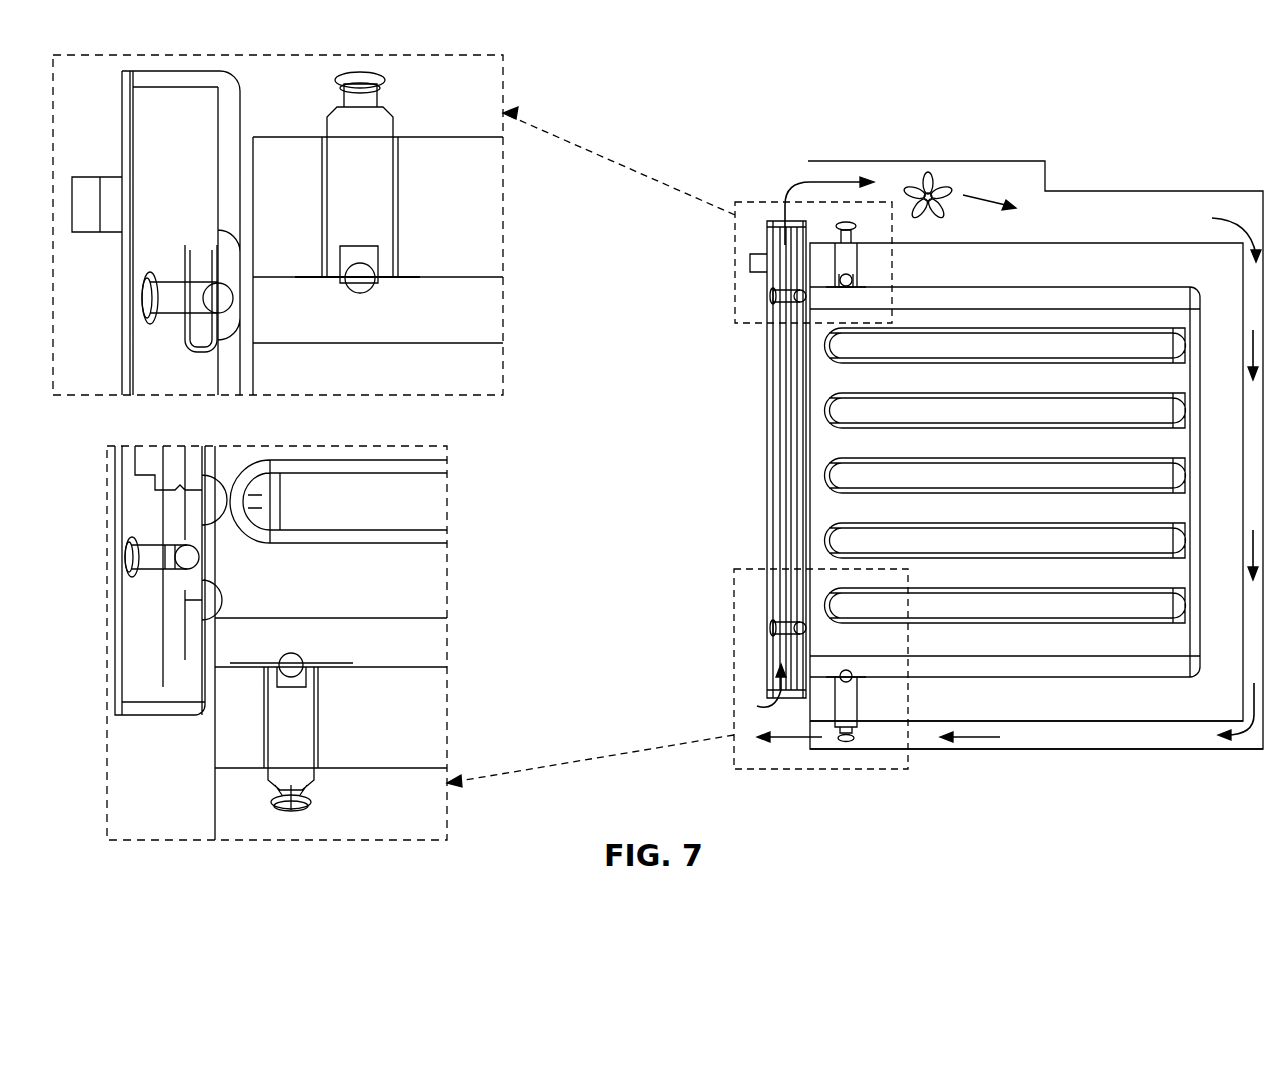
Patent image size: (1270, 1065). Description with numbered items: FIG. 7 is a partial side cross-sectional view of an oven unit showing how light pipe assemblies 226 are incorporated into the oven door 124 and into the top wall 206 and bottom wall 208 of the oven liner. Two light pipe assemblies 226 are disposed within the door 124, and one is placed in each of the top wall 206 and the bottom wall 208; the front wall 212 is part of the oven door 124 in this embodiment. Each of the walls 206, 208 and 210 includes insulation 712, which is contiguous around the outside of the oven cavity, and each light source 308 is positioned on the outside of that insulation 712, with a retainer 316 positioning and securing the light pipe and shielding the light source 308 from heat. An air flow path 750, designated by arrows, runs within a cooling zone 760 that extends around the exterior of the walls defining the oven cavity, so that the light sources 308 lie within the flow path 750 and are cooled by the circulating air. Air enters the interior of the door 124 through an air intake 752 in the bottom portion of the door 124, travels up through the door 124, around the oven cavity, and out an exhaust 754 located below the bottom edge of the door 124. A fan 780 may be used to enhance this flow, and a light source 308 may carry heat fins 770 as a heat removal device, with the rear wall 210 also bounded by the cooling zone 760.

The oven door 124 is at (780, 488).
The top wall 206 is at (1105, 338).
The bottom wall 208 is at (1185, 722).
The rear wall 210 is at (1190, 440).
The front wall 212 is at (800, 400).
The light pipe assembly 226 is at (812, 190).
The light source 308 is at (838, 225).
The retainer 316 is at (385, 122).
The insulation 712 is at (1040, 700).
The air flow path 750 is at (845, 240).
The air intake 752 is at (760, 705).
The exhaust 754 is at (808, 748).
The cooling zone 760 is at (1128, 160).
The heat fin 770 is at (312, 800).
The fan 780 is at (928, 175).